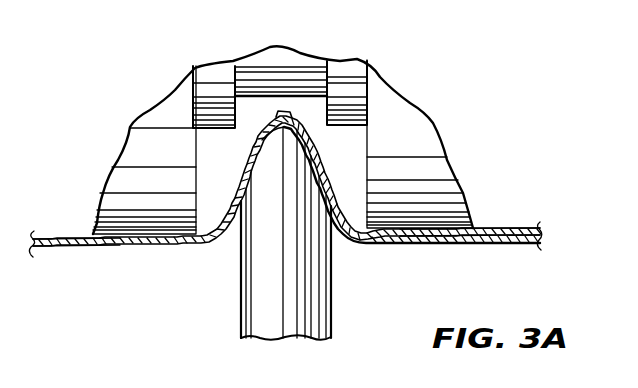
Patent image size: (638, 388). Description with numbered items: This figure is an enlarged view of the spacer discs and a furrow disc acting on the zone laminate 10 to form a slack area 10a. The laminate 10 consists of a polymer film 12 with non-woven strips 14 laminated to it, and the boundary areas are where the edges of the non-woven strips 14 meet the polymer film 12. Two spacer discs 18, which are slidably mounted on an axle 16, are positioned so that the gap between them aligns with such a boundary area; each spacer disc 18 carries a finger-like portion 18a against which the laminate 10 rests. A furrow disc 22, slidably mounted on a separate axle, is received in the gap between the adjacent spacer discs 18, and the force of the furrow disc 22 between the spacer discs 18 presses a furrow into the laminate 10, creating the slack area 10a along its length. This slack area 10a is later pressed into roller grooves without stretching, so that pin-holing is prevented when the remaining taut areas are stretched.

The laminate 10 is at (487, 243).
The slack area 10a is at (286, 113).
The polymer film 12 is at (67, 249).
The non-woven strips 14 is at (508, 228).
The axle 16 is at (255, 62).
The spacer discs 18 is at (124, 155).
The clamp finger 18a is at (211, 72).
The furrow disc 22 is at (246, 291).